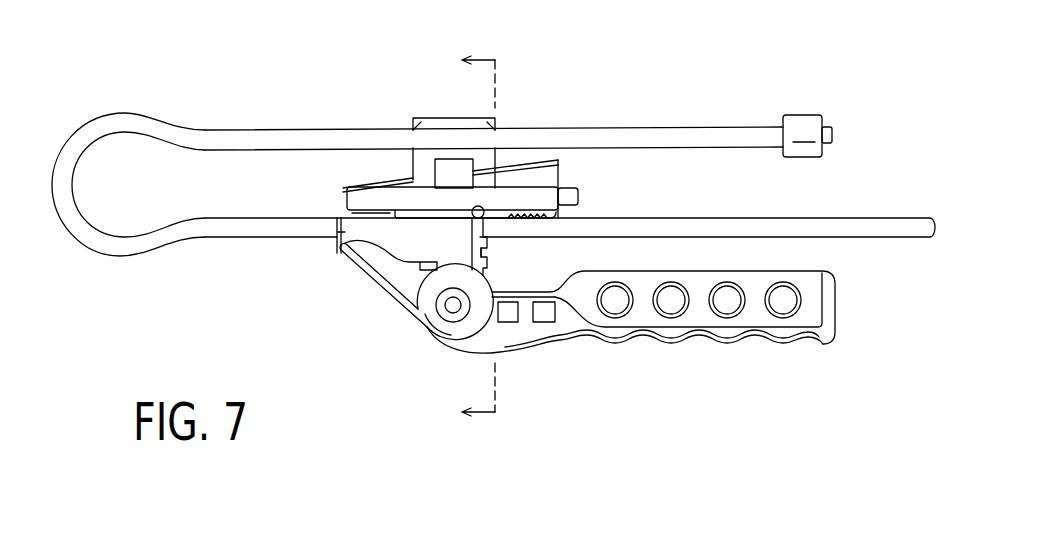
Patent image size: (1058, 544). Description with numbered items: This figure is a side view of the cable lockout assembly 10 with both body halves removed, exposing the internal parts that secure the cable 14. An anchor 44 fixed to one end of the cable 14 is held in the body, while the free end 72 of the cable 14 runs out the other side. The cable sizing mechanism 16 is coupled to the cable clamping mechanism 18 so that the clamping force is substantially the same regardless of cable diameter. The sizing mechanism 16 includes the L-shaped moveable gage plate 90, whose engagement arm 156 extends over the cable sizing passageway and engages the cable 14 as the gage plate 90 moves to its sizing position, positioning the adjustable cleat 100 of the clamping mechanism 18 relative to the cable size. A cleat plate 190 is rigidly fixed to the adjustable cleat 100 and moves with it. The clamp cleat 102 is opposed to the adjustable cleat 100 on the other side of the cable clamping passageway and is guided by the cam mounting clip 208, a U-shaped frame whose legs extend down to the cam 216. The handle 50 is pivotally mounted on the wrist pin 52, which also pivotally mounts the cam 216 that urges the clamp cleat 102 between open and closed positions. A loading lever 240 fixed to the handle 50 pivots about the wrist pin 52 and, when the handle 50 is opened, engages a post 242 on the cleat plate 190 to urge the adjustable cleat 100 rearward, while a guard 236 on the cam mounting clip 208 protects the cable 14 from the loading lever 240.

The cable lockout assembly 10 is at (488, 240).
The cable 14 is at (116, 85).
The cable sizing mechanism 16 is at (514, 95).
The cable clamping mechanism 18 is at (595, 165).
The anchor 44 is at (805, 114).
The handle 50 is at (613, 366).
The handle wrist pin 52 is at (452, 305).
The free end of the cable 72 is at (935, 217).
The moveable gage plate 90 is at (425, 118).
The adjustable cleat 100 is at (560, 160).
The clamp cleat 102 is at (483, 244).
The engagement arm 156 is at (458, 158).
The cleat plate 190 is at (556, 208).
The cam mounting clip 208 is at (440, 172).
The cam 216 is at (485, 266).
The guard 236 is at (337, 232).
The loading lever 240 is at (365, 258).
The post 242 is at (473, 216).